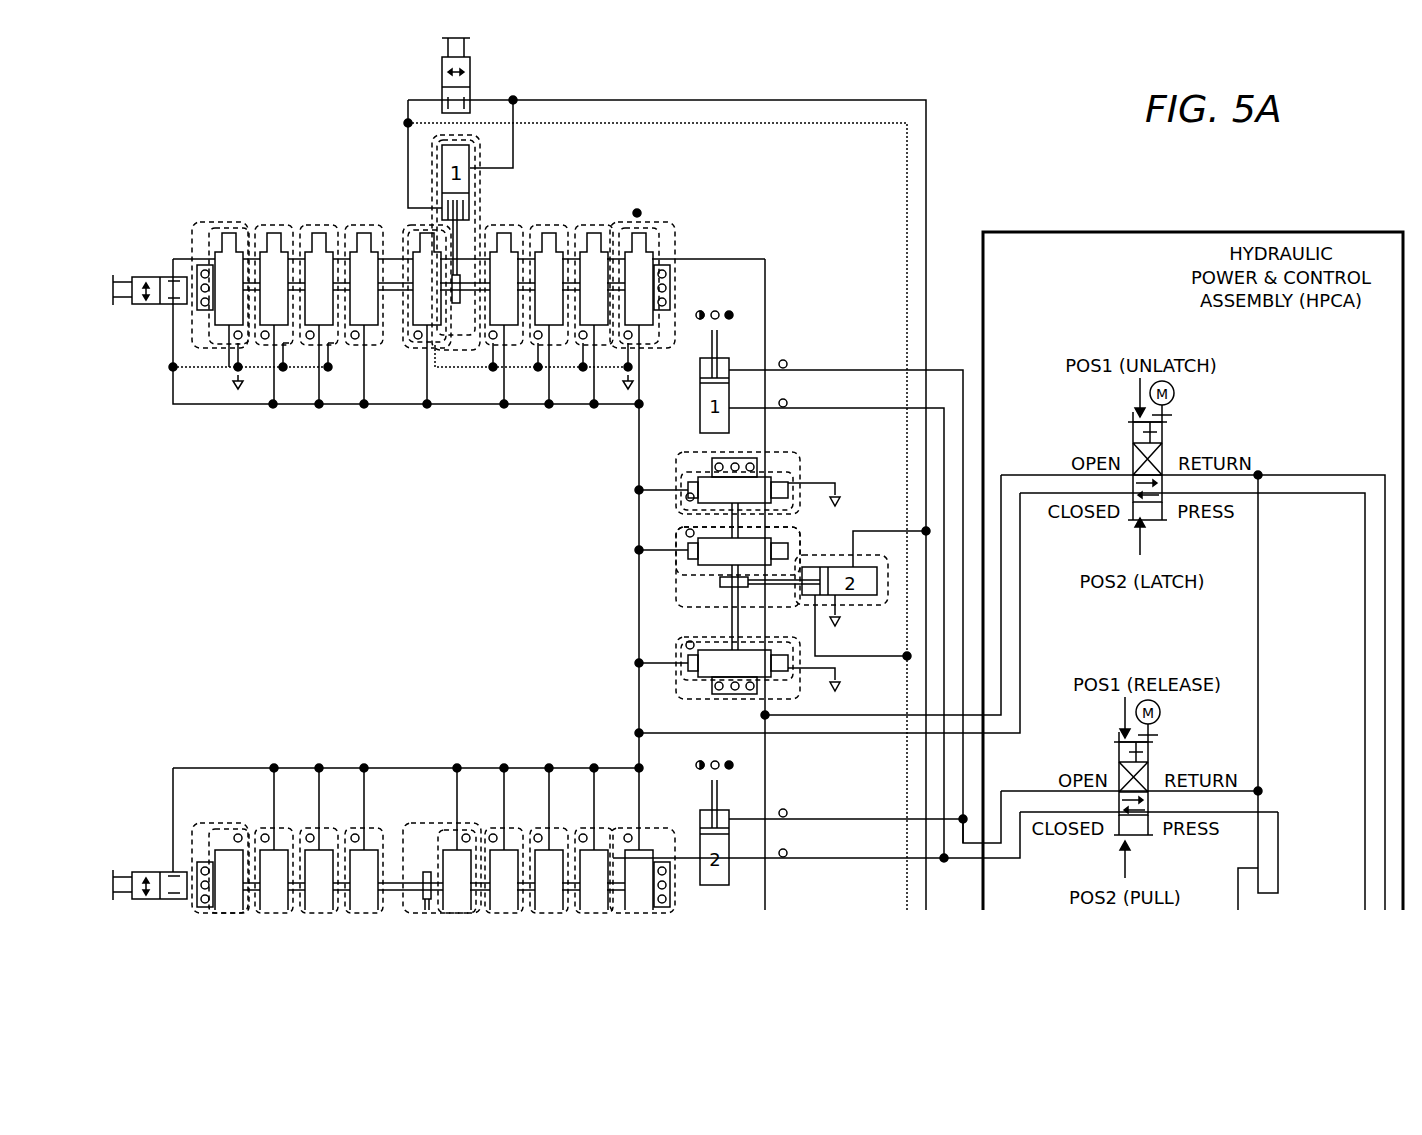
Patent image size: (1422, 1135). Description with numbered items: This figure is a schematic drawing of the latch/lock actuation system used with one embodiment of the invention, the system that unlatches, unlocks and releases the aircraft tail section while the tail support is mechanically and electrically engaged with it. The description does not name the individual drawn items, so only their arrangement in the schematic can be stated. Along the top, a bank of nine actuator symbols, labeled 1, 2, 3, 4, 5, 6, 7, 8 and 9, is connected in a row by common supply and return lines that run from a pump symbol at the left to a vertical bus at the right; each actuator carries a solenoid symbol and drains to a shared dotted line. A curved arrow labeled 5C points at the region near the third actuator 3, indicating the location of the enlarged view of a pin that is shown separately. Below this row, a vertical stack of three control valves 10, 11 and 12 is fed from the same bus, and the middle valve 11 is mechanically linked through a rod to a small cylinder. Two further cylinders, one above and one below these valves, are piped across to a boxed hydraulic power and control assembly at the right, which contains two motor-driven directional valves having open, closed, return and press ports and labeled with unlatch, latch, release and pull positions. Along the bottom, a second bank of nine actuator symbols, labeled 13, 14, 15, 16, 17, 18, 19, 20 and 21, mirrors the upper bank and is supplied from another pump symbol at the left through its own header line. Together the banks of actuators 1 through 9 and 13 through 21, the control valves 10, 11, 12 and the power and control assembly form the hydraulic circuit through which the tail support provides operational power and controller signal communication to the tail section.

The valve 1 is at (220, 294).
The valve 2 is at (274, 314).
The valve 3 is at (319, 314).
The valve 4 is at (364, 314).
The valve 5 is at (427, 314).
The valve 6 is at (504, 314).
The valve 7 is at (549, 314).
The valve 8 is at (594, 314).
The valve 9 is at (642, 313).
The valve 10 is at (758, 483).
The valve 11 is at (738, 567).
The valve 12 is at (758, 668).
The valve 13 is at (642, 840).
The valve 14 is at (594, 840).
The valve 15 is at (549, 840).
The valve 16 is at (504, 840).
The valve 17 is at (442, 840).
The valve 18 is at (364, 840).
The valve 19 is at (319, 840).
The valve 20 is at (274, 840).
The valve 21 is at (220, 868).
The enlarged view of a pin 5C is at (309, 346).